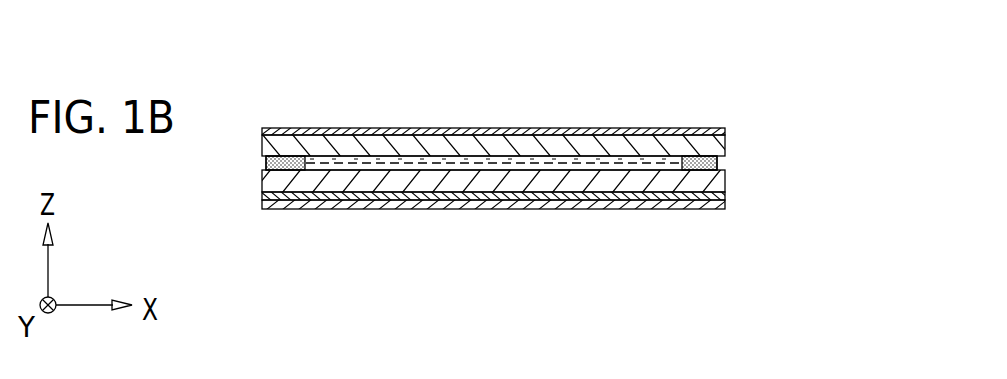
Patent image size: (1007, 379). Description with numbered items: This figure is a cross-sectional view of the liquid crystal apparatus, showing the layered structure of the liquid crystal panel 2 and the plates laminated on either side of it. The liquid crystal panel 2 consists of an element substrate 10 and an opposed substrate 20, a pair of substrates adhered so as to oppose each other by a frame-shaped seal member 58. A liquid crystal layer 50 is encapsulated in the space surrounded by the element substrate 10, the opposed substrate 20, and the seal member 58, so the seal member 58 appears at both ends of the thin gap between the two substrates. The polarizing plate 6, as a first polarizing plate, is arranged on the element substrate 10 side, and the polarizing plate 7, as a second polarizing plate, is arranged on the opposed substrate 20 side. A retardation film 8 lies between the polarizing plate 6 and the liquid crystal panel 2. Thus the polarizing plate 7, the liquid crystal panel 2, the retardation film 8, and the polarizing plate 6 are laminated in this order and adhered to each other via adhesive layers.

The liquid crystal panel 2 is at (524, 150).
The polarizing plate 6 is at (728, 207).
The polarizing plate 7 is at (722, 132).
The retardation film 8 is at (727, 197).
The element substrate 10 is at (722, 178).
The opposed substrate 20 is at (720, 144).
The liquid crystal layer 50 is at (497, 160).
The seal member 58 is at (292, 160).